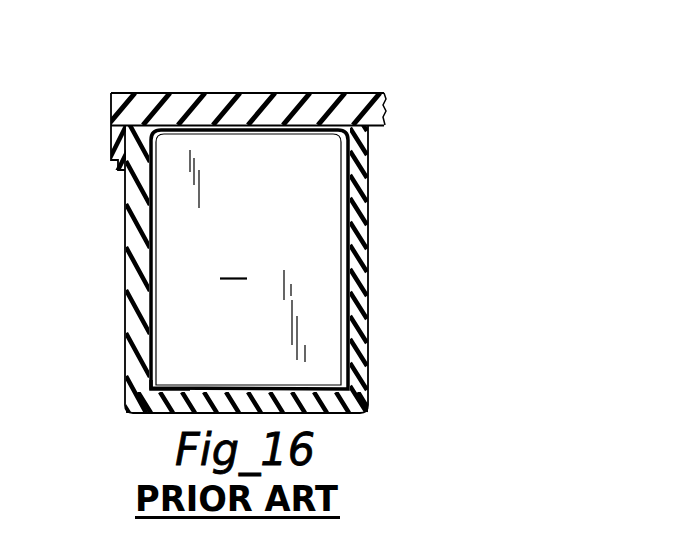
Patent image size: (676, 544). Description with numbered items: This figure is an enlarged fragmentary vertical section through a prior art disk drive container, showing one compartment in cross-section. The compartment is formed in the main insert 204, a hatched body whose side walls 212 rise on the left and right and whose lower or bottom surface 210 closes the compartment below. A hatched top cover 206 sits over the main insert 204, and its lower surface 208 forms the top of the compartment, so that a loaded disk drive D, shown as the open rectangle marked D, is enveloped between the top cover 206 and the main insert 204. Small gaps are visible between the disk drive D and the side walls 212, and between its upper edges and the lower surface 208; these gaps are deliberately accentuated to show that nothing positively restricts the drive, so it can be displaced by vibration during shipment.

The main insert 204 is at (271, 235).
The top cover 206 is at (253, 80).
The lower surface 208 is at (293, 124).
The bottom surface 210 is at (176, 392).
The side walls 212 is at (156, 258).